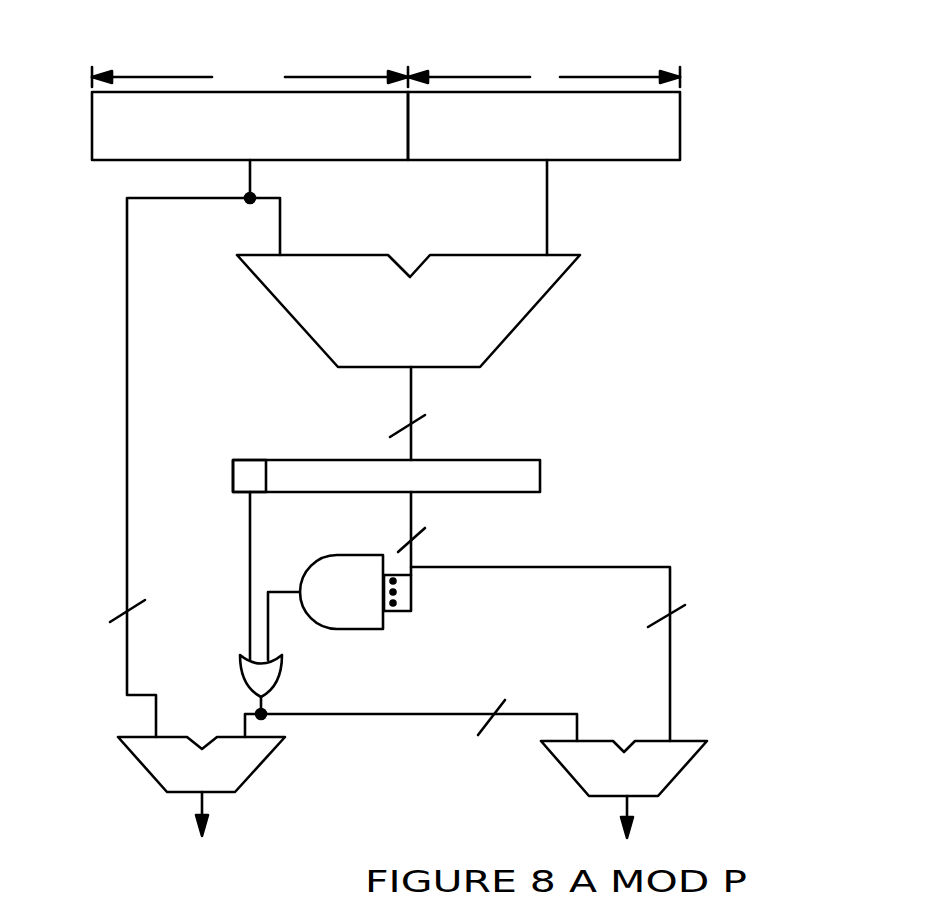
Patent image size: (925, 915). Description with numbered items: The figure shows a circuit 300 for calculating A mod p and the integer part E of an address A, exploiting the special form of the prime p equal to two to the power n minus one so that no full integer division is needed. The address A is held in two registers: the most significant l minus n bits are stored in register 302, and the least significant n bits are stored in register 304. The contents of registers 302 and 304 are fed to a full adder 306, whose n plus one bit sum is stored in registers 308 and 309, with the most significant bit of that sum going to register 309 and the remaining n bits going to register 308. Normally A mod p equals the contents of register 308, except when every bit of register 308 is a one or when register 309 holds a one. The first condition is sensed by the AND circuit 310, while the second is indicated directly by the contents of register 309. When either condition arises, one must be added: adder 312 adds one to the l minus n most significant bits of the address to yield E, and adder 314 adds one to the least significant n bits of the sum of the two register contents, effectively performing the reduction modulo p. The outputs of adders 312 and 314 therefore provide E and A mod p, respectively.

The circuit for calculating A mod p and E 300 is at (770, 104).
The register 302 is at (100, 130).
The register 304 is at (650, 145).
The full adder 306 is at (525, 303).
The register 308 is at (533, 480).
The register 309 is at (240, 465).
The AND circuit 310 is at (360, 618).
The adder 312 is at (247, 760).
The adder 314 is at (672, 768).